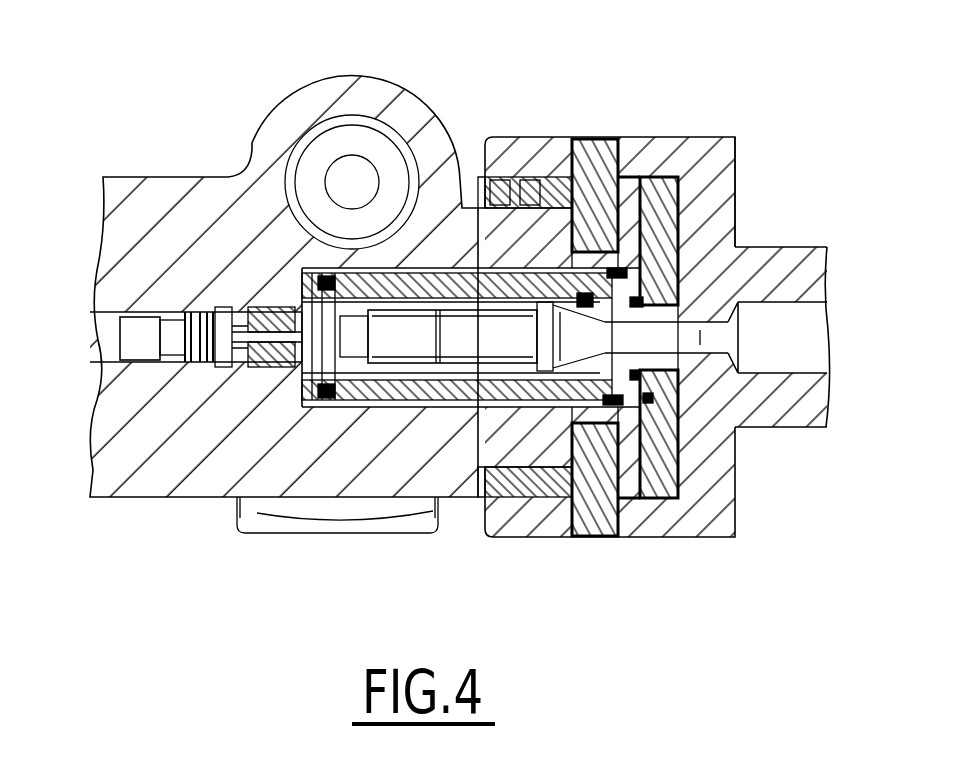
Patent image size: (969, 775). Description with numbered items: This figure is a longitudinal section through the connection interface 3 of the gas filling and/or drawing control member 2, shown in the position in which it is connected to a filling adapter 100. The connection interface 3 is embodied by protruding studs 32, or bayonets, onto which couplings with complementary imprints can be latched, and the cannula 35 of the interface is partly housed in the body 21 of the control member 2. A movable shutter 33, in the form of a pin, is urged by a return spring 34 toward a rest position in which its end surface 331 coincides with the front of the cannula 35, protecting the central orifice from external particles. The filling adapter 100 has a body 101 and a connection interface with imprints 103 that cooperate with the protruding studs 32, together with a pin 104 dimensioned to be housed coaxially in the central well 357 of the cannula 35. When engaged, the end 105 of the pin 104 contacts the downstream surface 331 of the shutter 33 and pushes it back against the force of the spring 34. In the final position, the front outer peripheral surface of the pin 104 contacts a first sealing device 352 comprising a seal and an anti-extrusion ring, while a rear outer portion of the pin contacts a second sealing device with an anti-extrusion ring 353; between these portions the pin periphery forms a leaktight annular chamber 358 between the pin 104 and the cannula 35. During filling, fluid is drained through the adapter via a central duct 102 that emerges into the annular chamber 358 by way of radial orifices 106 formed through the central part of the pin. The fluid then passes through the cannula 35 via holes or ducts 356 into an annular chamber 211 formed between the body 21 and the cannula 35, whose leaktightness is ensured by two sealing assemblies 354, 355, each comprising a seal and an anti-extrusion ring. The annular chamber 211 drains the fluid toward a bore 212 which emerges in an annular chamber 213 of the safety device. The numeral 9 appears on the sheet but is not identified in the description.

The gas filling and/or drawing control member 2 is at (187, 505).
The connection interface 3 is at (476, 504).
The inlet passage 9 is at (100, 338).
The body 21 is at (340, 462).
The protruding studs 32 is at (606, 150).
The movable shutter 33 is at (427, 338).
The return spring 34 is at (298, 352).
The cannula 35 is at (638, 405).
The filling adapter 100 is at (741, 240).
The body 101 is at (733, 140).
The central duct 102 is at (783, 317).
The imprints 103 is at (537, 520).
The pin 104 is at (533, 262).
The end of the pin 105 is at (505, 265).
The radial orifices 106 is at (712, 395).
The annular chamber 211 is at (465, 270).
The bore 212 is at (427, 250).
The annular chamber 213 is at (352, 123).
The end surface 331 is at (592, 400).
The first sealing device 352 is at (580, 285).
The anti-extrusion ring 353 is at (650, 290).
The sealing assembly 354 is at (715, 470).
The sealing assembly 355 is at (320, 270).
The holes or ducts 356 is at (598, 415).
The central well 357 is at (690, 300).
The leaktight annular chamber 358 is at (705, 322).